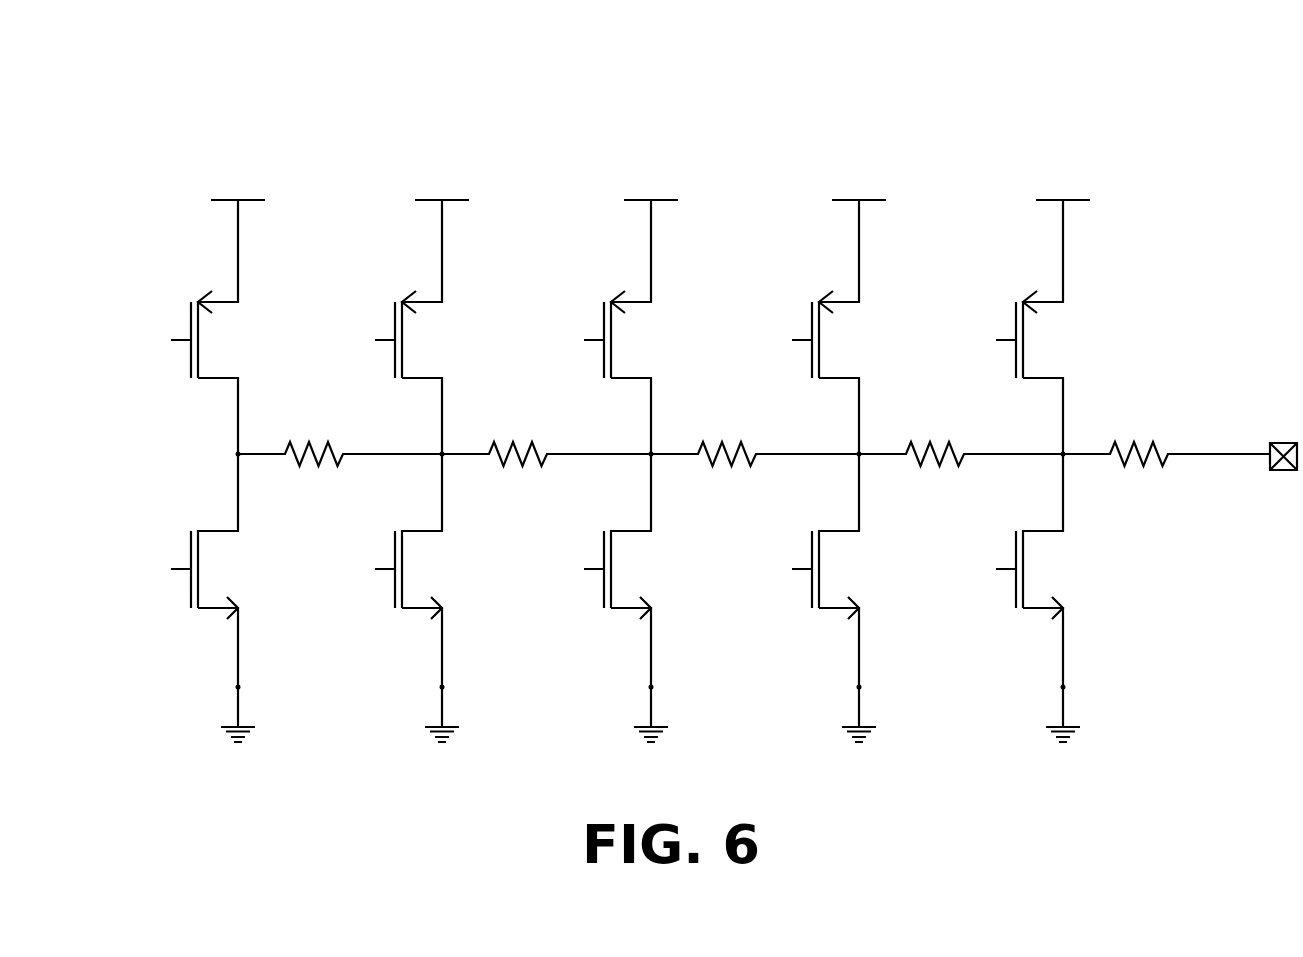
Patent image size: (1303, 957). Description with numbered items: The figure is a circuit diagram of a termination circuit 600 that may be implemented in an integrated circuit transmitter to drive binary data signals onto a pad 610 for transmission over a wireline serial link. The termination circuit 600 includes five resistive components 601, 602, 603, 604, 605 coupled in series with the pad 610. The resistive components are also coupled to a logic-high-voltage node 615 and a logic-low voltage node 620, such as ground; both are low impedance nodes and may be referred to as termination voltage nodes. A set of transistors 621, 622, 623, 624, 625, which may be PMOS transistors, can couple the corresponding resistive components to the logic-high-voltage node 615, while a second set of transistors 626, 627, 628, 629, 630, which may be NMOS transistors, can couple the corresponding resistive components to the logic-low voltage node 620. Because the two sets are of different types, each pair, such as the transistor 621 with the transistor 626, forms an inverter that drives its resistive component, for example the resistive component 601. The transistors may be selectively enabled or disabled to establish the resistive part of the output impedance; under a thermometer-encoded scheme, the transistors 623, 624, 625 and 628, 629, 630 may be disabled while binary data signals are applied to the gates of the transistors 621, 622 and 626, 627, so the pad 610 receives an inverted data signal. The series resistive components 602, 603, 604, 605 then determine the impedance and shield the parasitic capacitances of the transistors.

The termination circuit 600 is at (1074, 95).
The resistive component 601 is at (311, 442).
The resistive component 602 is at (514, 442).
The resistive component 603 is at (723, 442).
The resistive component 604 is at (931, 442).
The resistive component 605 is at (1135, 442).
The pad 610 is at (1284, 442).
The logic-high-voltage node 615 is at (1077, 200).
The logic-low voltage node 620 is at (1070, 687).
The transistor 621 is at (221, 298).
The transistor 622 is at (425, 298).
The transistor 623 is at (634, 298).
The transistor 624 is at (842, 298).
The transistor 625 is at (1046, 298).
The transistor 626 is at (218, 528).
The transistor 627 is at (422, 528).
The transistor 628 is at (631, 528).
The transistor 629 is at (839, 528).
The transistor 630 is at (1043, 528).